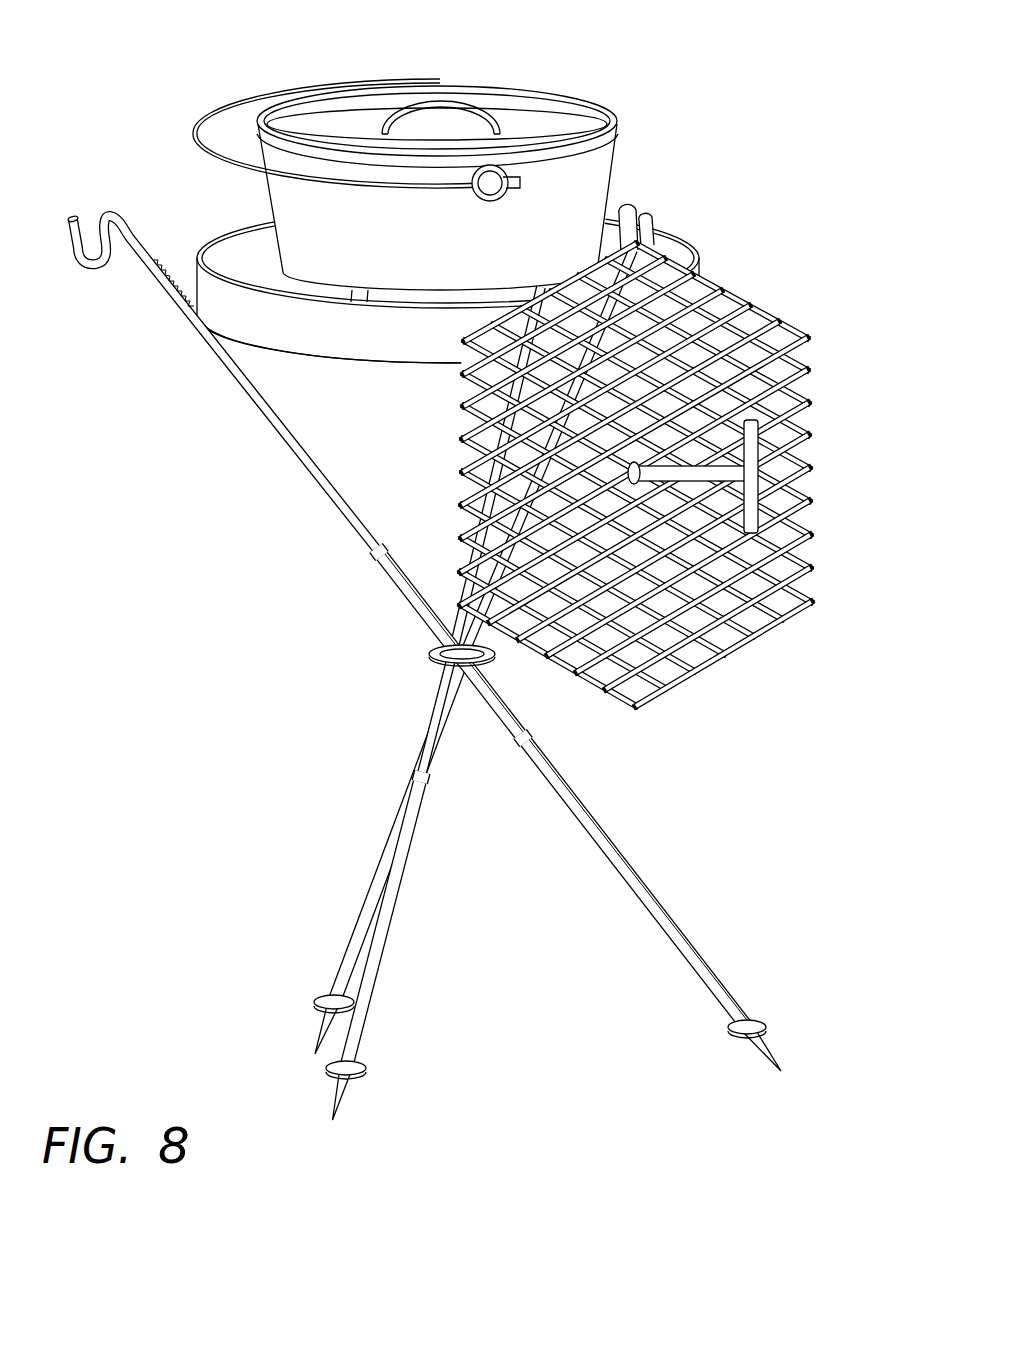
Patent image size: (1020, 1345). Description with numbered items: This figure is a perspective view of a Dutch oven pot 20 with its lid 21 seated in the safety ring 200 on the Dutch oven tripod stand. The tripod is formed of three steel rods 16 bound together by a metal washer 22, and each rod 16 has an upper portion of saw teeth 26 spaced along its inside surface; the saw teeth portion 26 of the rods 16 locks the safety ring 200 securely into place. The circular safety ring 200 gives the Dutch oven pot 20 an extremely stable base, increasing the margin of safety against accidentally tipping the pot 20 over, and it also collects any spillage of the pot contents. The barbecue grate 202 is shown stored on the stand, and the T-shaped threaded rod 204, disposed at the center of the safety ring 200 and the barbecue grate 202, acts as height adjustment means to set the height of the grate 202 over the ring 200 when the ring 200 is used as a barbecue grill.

The steel rod 16 is at (592, 824).
The Dutch oven pot 20 is at (583, 198).
The lid 21 is at (530, 124).
The metal washer 22 is at (430, 650).
The saw teeth 26 is at (150, 262).
The safety ring 200 is at (218, 303).
The barbecue grate 202 is at (767, 313).
The T-shaped threaded rod 204 is at (768, 470).